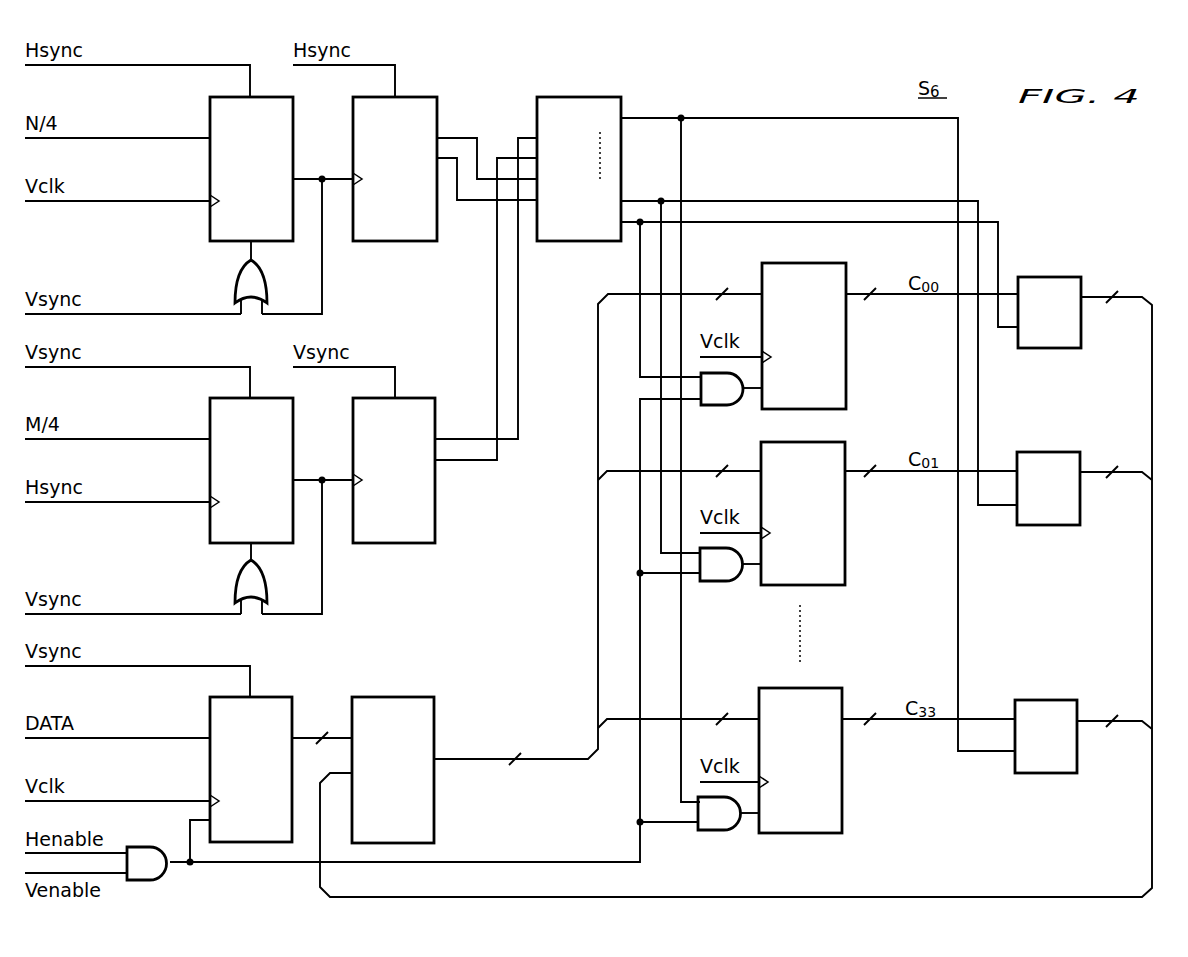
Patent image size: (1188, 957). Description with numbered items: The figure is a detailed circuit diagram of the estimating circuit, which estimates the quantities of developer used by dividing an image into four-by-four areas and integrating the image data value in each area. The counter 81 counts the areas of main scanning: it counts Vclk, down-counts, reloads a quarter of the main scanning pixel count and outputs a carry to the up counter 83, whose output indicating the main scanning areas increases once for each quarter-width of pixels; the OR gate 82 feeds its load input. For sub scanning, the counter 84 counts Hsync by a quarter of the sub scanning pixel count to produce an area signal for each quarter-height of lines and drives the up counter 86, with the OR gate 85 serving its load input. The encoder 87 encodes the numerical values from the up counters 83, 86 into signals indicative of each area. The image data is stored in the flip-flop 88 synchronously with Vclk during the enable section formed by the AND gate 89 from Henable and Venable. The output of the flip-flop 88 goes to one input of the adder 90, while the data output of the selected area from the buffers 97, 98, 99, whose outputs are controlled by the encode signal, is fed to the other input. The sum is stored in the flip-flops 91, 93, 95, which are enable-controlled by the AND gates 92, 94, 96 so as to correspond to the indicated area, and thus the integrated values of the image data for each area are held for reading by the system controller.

The counter 81 is at (284, 97).
The OR gate 82 is at (267, 272).
The up counter 83 is at (424, 97).
The counter 84 is at (284, 398).
The OR gate 85 is at (267, 572).
The up counter 86 is at (422, 398).
The encoder 87 is at (596, 97).
The flip-flop 88 is at (284, 697).
The AND gate 89 is at (148, 846).
The adder 90 is at (420, 697).
The flip-flop 91 is at (818, 263).
The AND gate 92 is at (716, 407).
The flip-flop 93 is at (818, 442).
The AND gate 94 is at (715, 583).
The flip-flop 95 is at (818, 688).
The AND gate 96 is at (714, 832).
The buffer with output enable 97 is at (1060, 277).
The buffer with output enable 98 is at (1058, 452).
The buffer with output enable 99 is at (1055, 700).